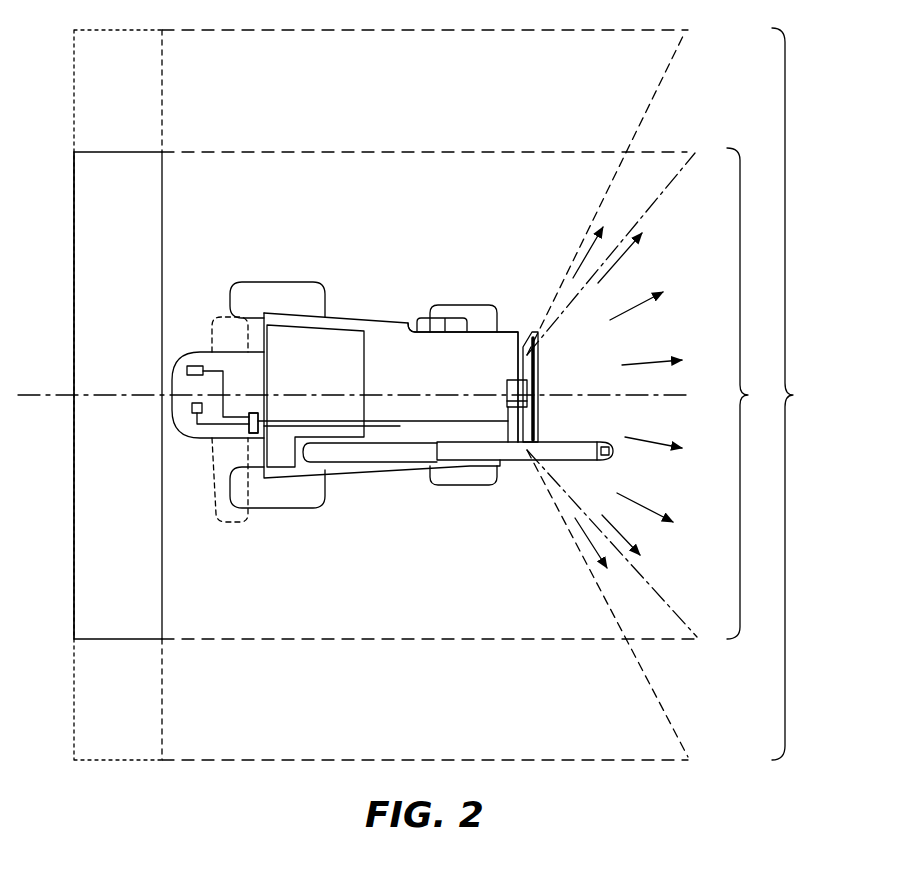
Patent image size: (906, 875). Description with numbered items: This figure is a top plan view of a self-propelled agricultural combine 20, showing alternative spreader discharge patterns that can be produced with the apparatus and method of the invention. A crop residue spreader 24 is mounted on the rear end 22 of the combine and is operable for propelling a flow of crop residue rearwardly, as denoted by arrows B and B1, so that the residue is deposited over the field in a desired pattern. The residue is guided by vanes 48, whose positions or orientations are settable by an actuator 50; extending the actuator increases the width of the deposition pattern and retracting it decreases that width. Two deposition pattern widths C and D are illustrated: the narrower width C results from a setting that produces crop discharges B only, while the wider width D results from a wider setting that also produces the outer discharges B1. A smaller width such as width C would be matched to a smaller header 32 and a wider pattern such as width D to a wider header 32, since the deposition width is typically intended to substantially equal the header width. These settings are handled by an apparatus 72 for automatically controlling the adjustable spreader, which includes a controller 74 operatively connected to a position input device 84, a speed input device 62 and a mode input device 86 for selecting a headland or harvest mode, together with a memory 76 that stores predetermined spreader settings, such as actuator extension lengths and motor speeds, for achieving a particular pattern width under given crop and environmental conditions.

The self-propelled agricultural combine 20 is at (395, 314).
The rear end 22 is at (512, 324).
The crop residue spreader 24 is at (546, 356).
The header 32 is at (74, 228).
The vanes 48 is at (542, 430).
The actuator 50 is at (524, 377).
The speed input device 62 is at (137, 374).
The position input device 84 is at (218, 395).
The mode input device 86 is at (192, 364).
The apparatus for automatically controlling the settings of the adjustable crop resi 72 is at (246, 429).
The controller 74 is at (302, 398).
The memory 76 is at (256, 413).
The crop discharges B is at (623, 260).
The crop discharges B1 is at (580, 252).
The crop residue deposition pattern width C is at (424, 393).
The crop residue deposition pattern width D is at (447, 394).